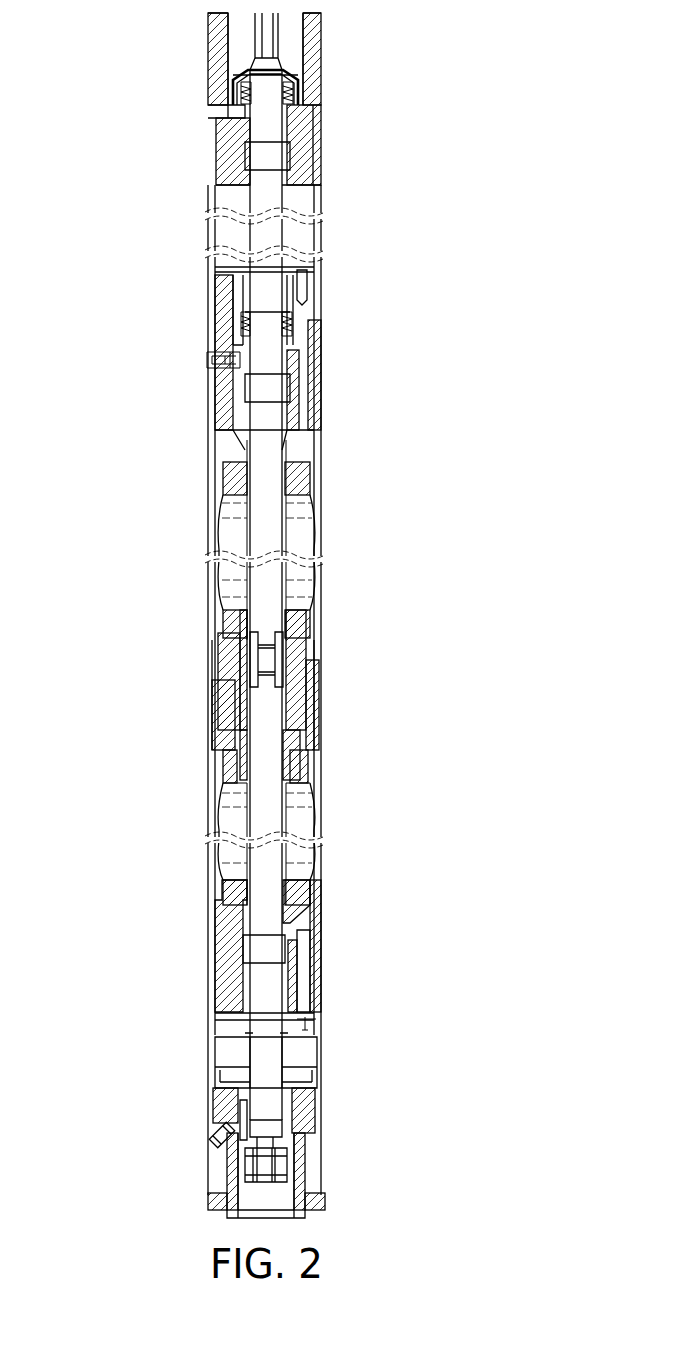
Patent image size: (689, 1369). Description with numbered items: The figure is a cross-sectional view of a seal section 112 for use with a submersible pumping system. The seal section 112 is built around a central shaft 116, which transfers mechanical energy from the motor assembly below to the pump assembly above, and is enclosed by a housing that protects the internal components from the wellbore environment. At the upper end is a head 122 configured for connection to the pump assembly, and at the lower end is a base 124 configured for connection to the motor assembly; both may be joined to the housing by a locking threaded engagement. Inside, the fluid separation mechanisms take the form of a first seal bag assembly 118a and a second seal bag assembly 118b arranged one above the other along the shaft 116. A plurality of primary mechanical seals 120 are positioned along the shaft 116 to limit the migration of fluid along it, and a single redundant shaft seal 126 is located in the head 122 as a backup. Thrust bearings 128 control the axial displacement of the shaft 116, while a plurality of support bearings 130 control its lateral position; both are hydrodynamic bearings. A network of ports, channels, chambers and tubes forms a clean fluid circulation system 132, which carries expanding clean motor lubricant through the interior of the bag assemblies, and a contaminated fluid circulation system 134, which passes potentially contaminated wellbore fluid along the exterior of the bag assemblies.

The seal section 112 is at (118, 266).
The shaft 116 is at (283, 47).
The first seal bag assembly 118a is at (175, 553).
The second seal bag assembly 118b is at (175, 838).
The primary mechanical seals 120 is at (290, 104).
The head 122 is at (207, 46).
The base 124 is at (218, 1200).
The redundant shaft seal 126 is at (297, 75).
The thrust bearings 128 is at (300, 1070).
The support bearings 130 is at (243, 392).
The clean fluid circulation system 132 is at (236, 682).
The contaminated fluid circulation system 134 is at (306, 395).